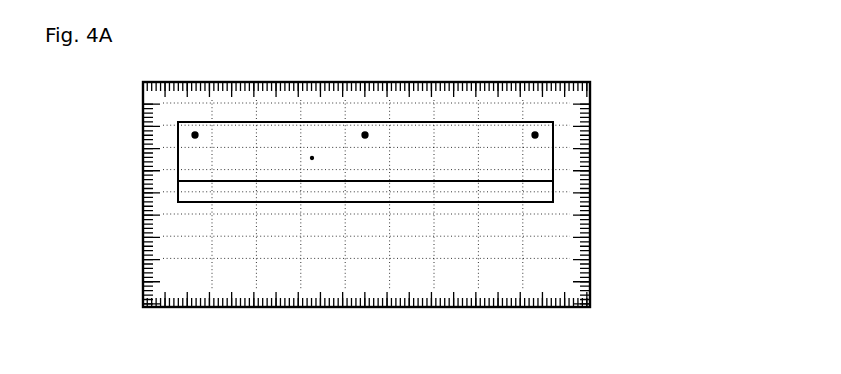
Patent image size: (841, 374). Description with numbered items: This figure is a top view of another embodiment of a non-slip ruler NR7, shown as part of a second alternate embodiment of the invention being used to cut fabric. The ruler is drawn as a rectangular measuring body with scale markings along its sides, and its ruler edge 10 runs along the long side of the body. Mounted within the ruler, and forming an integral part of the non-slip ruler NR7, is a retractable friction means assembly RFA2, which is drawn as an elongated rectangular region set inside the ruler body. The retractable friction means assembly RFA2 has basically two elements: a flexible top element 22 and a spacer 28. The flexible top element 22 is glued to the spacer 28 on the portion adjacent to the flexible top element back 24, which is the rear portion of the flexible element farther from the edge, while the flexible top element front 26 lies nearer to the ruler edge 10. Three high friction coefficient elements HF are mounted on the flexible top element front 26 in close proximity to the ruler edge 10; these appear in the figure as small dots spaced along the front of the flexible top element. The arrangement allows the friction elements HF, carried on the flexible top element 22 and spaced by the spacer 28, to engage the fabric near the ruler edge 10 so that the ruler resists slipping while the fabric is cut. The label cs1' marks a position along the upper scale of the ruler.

The ruler edge 10 is at (565, 82).
The flexible top element 22 is at (268, 142).
The flexible top element back 24 is at (180, 203).
The flexible top element front 26 is at (330, 122).
The spacer 28 is at (540, 190).
The high friction coefficient element HF is at (195, 135).
The retractable friction means assembly RFA2 is at (312, 158).
The non-slip ruler NR7 is at (242, 60).
The first cutting side indicator cs1' is at (535, 51).